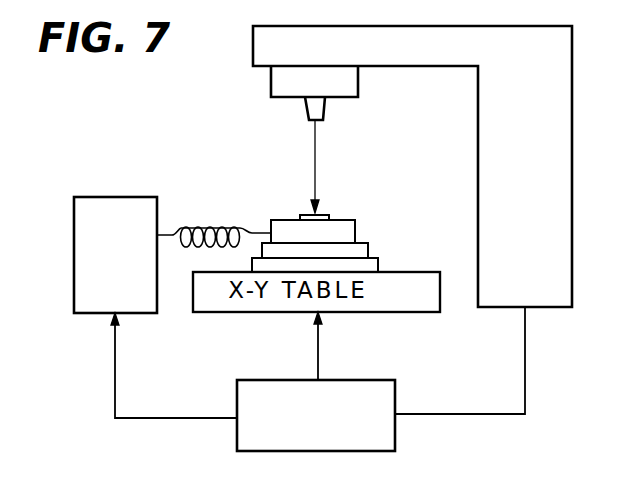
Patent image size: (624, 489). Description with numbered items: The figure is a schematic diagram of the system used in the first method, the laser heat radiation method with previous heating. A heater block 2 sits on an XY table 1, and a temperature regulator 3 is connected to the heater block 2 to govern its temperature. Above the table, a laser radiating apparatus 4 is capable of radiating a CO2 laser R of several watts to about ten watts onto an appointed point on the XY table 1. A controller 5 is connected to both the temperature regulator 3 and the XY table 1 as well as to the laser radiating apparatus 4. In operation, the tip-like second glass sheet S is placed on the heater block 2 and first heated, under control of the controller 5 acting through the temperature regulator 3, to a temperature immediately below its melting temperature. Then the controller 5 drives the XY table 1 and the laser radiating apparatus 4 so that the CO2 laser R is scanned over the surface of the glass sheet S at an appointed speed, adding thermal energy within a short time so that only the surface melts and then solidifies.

The XY table 1 is at (380, 265).
The heater block 2 is at (357, 232).
The temperature regulator 3 is at (103, 197).
The laser radiating apparatus 4 is at (573, 247).
The controller 5 is at (395, 391).
The CO2 laser R is at (317, 177).
The tip-like second glass sheet S is at (305, 214).